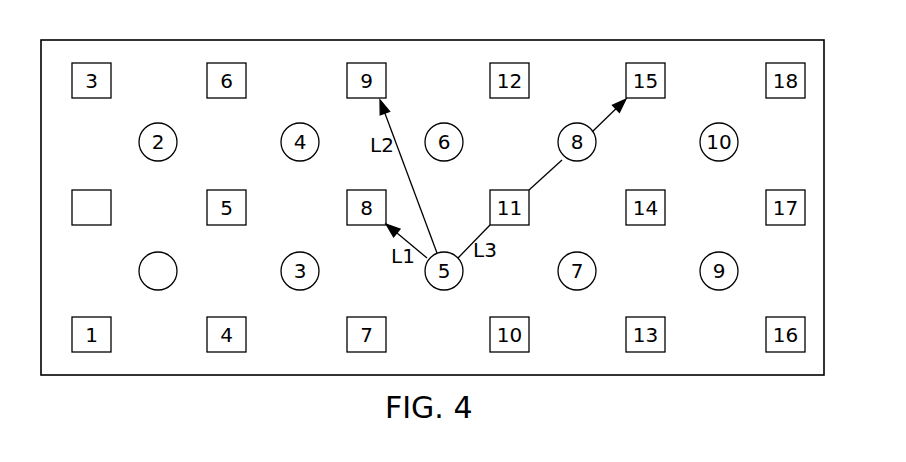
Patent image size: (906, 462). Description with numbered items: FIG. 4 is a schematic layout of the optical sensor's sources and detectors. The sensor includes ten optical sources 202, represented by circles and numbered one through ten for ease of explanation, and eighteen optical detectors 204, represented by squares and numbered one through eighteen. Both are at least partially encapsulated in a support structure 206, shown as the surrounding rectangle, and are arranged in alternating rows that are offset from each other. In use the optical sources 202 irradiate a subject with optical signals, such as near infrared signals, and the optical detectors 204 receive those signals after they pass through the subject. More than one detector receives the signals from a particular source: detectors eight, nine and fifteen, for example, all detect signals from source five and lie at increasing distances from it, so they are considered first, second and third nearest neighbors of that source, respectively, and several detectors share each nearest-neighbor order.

The optical sources 202 is at (158, 284).
The optical detectors 204 is at (101, 221).
The support structure 206 is at (141, 365).